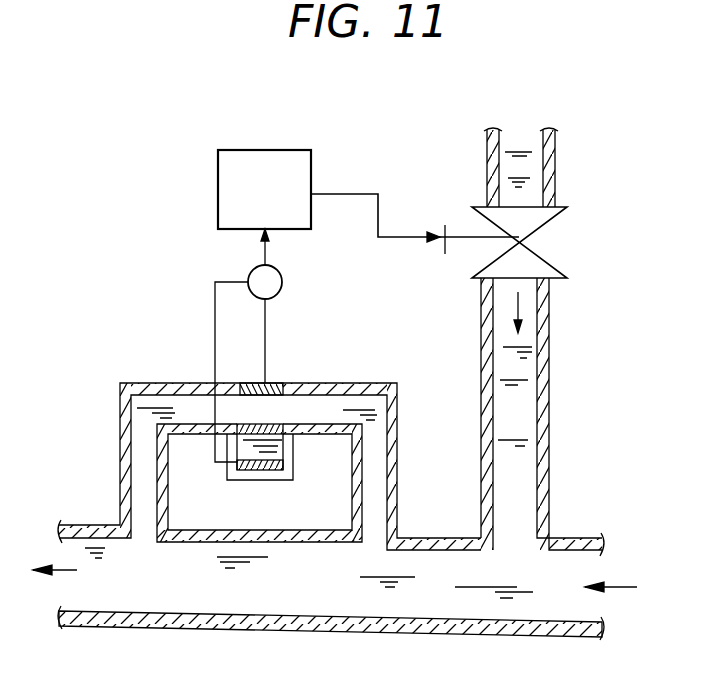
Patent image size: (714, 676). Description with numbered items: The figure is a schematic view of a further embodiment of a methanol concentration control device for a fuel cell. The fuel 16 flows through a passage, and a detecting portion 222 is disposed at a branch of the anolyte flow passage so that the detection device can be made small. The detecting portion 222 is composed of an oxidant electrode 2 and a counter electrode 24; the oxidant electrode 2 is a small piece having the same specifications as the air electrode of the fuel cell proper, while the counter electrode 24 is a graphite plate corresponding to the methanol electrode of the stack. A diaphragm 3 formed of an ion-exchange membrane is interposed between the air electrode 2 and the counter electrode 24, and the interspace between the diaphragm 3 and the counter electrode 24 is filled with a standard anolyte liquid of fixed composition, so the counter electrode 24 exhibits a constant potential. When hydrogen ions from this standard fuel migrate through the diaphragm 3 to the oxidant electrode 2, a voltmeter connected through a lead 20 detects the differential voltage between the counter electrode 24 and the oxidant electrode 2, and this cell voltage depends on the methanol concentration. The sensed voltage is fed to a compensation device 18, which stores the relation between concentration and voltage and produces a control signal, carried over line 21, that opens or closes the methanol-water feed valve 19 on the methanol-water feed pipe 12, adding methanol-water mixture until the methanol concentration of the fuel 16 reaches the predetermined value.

The compensation device 18 is at (299, 150).
The control signal line 21 is at (365, 194).
The methanol-water feed valve 19 is at (561, 206).
The methanol-water feed pipe 12 is at (549, 368).
The detecting portion 222 is at (120, 462).
The oxidant electrode 2 is at (269, 383).
The diaphragm 3 is at (274, 429).
The counter electrode 24 is at (258, 470).
The lead 20 is at (213, 312).
The fuel 16 is at (349, 611).